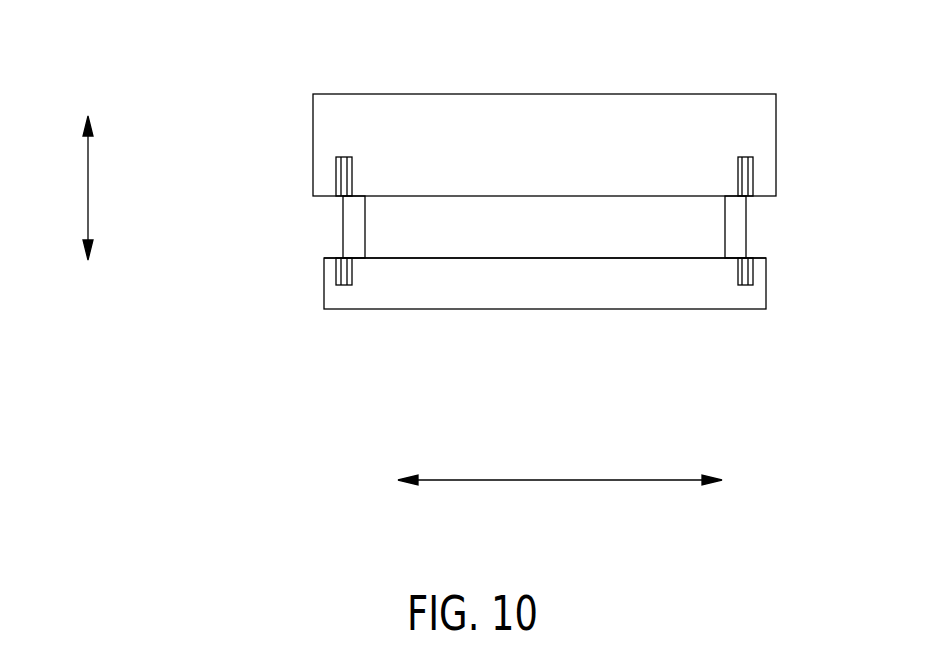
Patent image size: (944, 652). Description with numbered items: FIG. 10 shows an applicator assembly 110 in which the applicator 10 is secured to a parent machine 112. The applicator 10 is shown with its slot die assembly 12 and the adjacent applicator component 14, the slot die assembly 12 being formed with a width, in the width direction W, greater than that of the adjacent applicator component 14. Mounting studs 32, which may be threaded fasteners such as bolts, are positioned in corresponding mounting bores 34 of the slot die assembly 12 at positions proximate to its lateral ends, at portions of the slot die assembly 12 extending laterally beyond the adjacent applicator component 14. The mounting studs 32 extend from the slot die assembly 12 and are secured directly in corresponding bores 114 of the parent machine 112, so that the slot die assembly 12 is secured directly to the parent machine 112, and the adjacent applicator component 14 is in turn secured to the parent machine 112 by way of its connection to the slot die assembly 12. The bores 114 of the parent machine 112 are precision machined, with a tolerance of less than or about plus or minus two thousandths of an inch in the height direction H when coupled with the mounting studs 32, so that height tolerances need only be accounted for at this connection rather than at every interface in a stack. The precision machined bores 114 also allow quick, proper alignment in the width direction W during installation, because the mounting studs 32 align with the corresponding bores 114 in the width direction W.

The applicator 10 is at (545, 303).
The slot die assembly 12 is at (652, 300).
The adjacent applicator component 14 is at (600, 233).
The mounting stud 32 is at (343, 226).
The mounting bore 34 is at (336, 272).
The applicator assembly 110 is at (521, 103).
The parent machine 112 is at (637, 95).
The corresponding bore 114 is at (342, 156).
The height direction H is at (87, 176).
The width direction W is at (608, 482).